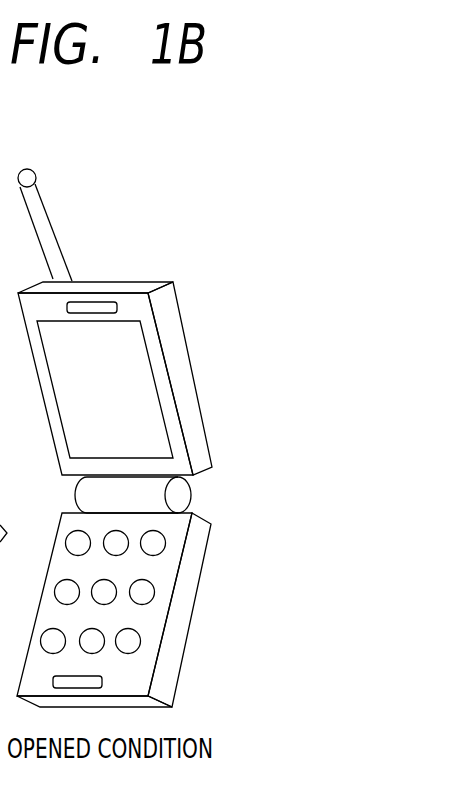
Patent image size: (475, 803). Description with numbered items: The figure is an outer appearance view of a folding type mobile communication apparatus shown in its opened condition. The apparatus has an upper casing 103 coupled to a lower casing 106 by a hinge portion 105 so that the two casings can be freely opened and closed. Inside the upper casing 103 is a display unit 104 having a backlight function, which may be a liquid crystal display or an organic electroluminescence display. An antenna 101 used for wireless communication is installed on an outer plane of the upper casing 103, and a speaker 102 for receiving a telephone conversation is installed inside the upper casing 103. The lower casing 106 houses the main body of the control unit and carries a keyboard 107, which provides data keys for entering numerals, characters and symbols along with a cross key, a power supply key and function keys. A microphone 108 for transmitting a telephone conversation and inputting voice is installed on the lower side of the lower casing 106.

The antenna 101 is at (29, 165).
The speaker 102 is at (93, 300).
The upper casing 103 is at (174, 279).
The display unit 104 is at (160, 390).
The hinge portion 105 is at (167, 495).
The lower casing 106 is at (218, 523).
The keyboard 107 is at (155, 592).
The microphone 108 is at (105, 682).